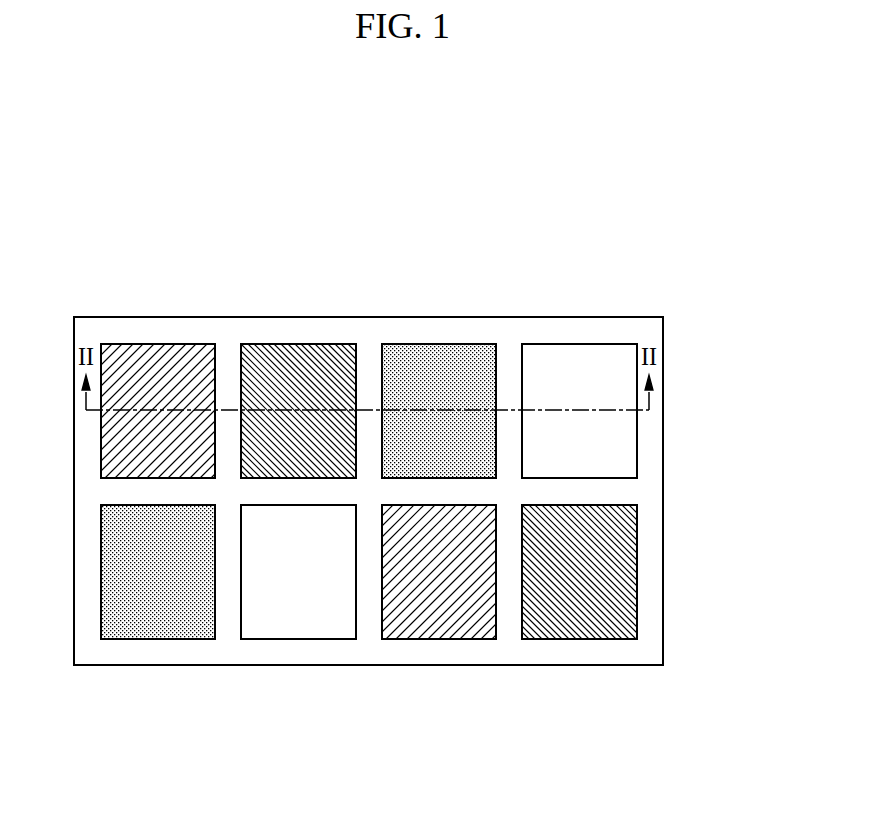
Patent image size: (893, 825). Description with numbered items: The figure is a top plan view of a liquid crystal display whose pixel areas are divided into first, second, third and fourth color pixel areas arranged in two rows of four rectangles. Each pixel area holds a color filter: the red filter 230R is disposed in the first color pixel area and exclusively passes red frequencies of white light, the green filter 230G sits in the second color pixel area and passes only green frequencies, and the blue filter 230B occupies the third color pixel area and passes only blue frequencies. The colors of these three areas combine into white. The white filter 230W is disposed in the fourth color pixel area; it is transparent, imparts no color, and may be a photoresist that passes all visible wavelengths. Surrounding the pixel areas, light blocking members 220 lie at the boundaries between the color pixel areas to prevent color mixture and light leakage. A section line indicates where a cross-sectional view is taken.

The light blocking member 220 is at (650, 492).
The red filter 230R is at (180, 360).
The green filter 230G is at (318, 360).
The blue filter 230B is at (408, 360).
The white filter 230W is at (552, 360).